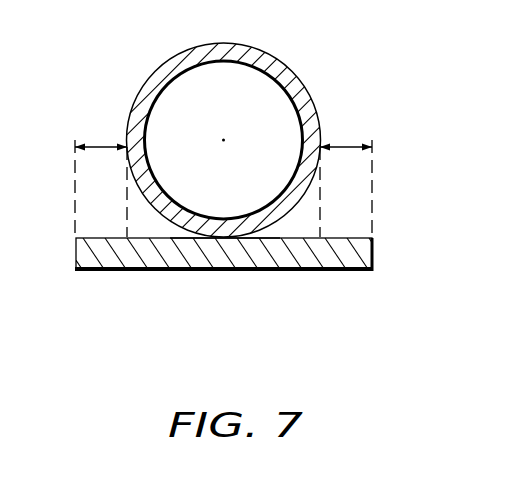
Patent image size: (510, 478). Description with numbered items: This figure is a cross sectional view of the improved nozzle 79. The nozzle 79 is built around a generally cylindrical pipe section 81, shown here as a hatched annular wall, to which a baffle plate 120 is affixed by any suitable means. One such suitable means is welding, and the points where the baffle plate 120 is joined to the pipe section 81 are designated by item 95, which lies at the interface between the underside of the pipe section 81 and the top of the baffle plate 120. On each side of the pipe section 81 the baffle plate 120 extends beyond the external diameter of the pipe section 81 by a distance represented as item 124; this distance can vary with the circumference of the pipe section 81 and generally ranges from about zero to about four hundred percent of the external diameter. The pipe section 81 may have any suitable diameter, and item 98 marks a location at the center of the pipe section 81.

The nozzle 79 is at (290, 52).
The generally cylindrical pipe section 81 is at (183, 50).
The fiber center axis 98 is at (222, 135).
The distance 124 is at (99, 145).
The baffle plate 120 is at (366, 248).
The welding points 95 is at (177, 238).